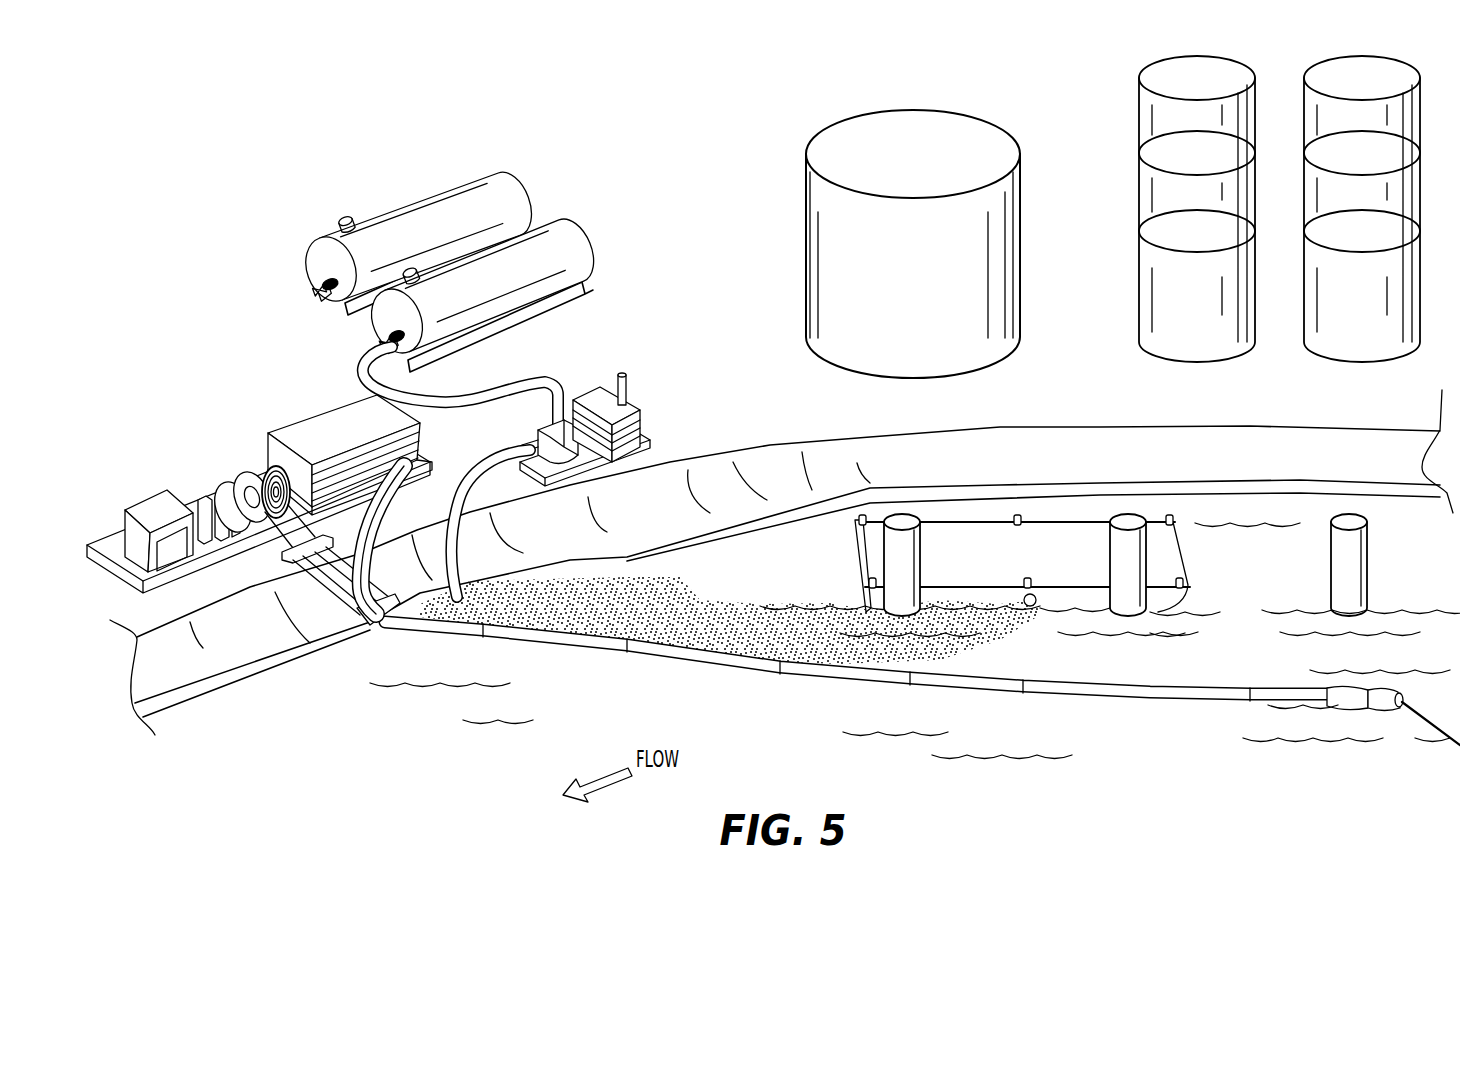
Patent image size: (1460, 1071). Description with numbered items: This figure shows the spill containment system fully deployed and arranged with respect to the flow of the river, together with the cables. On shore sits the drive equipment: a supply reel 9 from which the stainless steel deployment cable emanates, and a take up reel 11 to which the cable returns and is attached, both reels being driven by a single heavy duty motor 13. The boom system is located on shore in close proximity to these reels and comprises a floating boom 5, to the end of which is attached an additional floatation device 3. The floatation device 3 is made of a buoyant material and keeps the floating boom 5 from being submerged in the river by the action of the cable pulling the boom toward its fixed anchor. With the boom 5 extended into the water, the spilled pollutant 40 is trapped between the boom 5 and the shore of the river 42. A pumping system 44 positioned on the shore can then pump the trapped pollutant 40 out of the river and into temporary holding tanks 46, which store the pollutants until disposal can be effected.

The floatation device 3 is at (1360, 692).
The floating boom 5 is at (1267, 692).
The supply reel 9 is at (267, 470).
The take up reel 11 is at (227, 480).
The heavy duty motor 13 is at (145, 508).
The spilled pollutant 40 is at (670, 600).
The shore of the river 42 is at (766, 437).
The pumping system 44 is at (640, 403).
The temporary holding tanks 46 is at (570, 220).